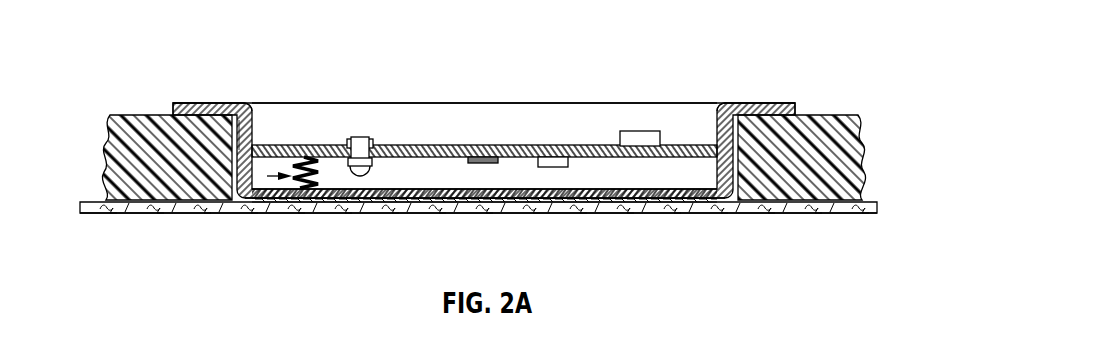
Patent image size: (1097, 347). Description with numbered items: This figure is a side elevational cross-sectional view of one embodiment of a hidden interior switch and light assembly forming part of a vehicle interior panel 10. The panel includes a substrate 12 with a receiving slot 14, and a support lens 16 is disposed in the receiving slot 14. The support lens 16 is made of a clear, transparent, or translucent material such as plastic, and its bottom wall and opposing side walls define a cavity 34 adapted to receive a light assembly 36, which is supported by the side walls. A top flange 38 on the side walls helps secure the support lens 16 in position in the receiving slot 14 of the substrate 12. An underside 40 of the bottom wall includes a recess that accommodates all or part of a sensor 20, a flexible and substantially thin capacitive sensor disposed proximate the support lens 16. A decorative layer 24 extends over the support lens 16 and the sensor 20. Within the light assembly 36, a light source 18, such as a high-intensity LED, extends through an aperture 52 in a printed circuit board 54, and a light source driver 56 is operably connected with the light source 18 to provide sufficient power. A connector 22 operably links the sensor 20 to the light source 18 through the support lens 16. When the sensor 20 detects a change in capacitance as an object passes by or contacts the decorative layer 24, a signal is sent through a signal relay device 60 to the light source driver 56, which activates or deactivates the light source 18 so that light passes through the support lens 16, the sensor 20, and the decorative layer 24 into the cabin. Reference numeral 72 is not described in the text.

The vehicle interior panel 10 is at (134, 62).
The substrate 12 is at (833, 115).
The receiving slot 14 is at (253, 122).
The support lens 16 is at (423, 128).
The light source 18 is at (361, 177).
The sensor 20 is at (641, 203).
The connector 22 is at (313, 195).
The decorative layer 24 is at (870, 202).
The cavity 34 is at (496, 134).
The light assembly 36 is at (588, 124).
The top flange 38 is at (200, 103).
The underside 40 is at (583, 200).
The aperture 52 is at (350, 138).
The printed circuit board 54 is at (521, 146).
The light source driver 56 is at (640, 131).
The signal relay device 60 is at (267, 178).
The spring 72 is at (318, 172).